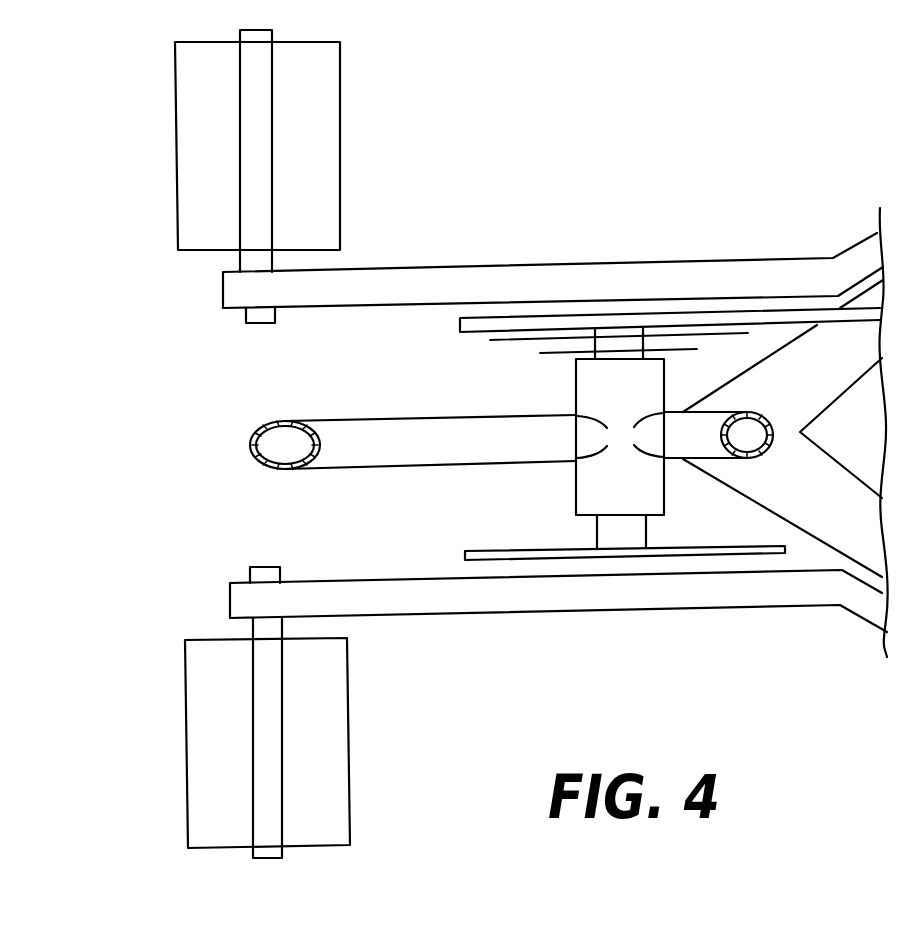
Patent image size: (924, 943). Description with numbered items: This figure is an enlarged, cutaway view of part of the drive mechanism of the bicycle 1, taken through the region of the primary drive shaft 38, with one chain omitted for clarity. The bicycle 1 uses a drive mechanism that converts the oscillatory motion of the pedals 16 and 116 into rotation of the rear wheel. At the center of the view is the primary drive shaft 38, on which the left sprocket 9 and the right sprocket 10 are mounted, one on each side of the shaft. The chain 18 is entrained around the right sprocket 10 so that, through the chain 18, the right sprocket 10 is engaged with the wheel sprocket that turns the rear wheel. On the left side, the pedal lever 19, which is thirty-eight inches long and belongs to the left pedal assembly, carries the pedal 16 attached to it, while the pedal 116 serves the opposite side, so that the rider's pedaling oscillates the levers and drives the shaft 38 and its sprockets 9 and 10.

The bicycle 1 is at (498, 702).
The left sprocket 9 is at (757, 554).
The right sprocket 10 is at (502, 323).
The pedal 16 is at (352, 795).
The pedal 116 is at (338, 82).
The chain 18 is at (797, 308).
The pedal lever 19 is at (870, 615).
The primary drive shaft 38 is at (598, 521).